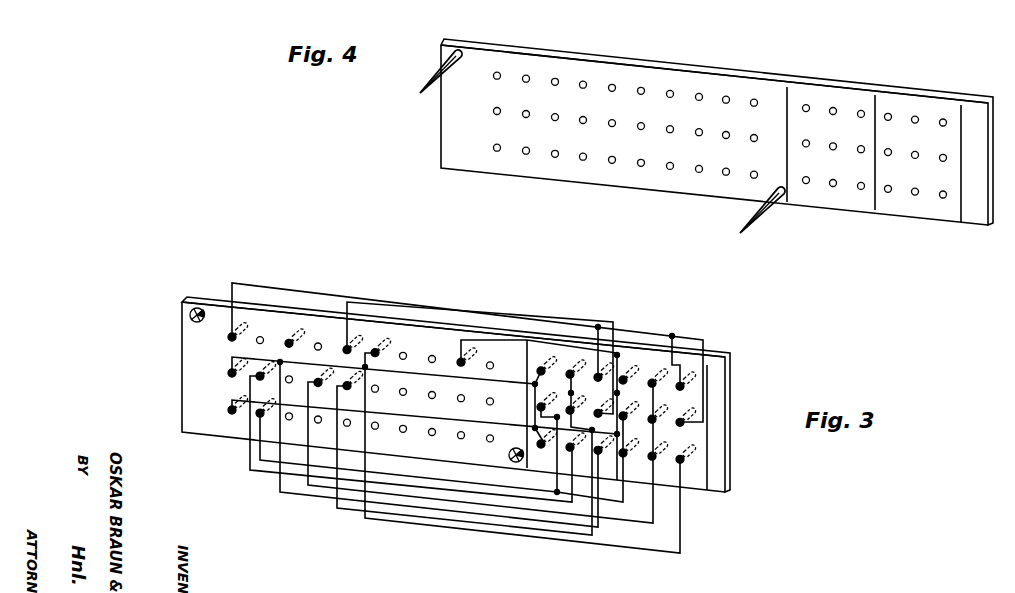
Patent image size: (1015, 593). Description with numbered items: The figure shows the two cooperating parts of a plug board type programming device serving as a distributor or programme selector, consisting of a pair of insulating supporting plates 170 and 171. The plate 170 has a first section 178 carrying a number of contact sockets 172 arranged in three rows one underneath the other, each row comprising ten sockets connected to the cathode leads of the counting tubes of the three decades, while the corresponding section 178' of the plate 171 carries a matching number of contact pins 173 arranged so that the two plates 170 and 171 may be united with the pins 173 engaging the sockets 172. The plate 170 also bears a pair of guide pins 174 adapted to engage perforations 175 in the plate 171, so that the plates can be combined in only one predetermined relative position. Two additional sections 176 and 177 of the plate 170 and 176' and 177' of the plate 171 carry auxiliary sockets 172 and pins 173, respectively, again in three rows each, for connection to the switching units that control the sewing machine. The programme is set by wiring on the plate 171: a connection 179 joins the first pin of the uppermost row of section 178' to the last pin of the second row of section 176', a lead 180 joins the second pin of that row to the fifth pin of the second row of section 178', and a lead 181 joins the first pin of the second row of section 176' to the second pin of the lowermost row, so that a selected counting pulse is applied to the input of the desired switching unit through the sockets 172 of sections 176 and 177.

In FIG. 4, the insulating supporting plate 170 is at (728, 65).
In FIG. 3, the insulating supporting plate 171 is at (177, 428).
In FIG. 4, the contact socket 172 is at (553, 78).
In FIG. 3, the contact pin 173 is at (240, 332).
In FIG. 4, the guide pin 174 is at (420, 93).
In FIG. 3, the perforation 175 is at (190, 316).
In FIG. 4, the section 176 is at (831, 125).
In FIG. 4, the section 177 is at (918, 140).
In FIG. 4, the first section 178 is at (626, 97).
In FIG. 3, the section 176' is at (572, 386).
In FIG. 3, the section 177' is at (663, 399).
In FIG. 3, the section 178' is at (435, 352).
In FIG. 3, the connection 179 is at (448, 307).
In FIG. 3, the lead 180 is at (348, 510).
In FIG. 3, the lead 181 is at (262, 466).